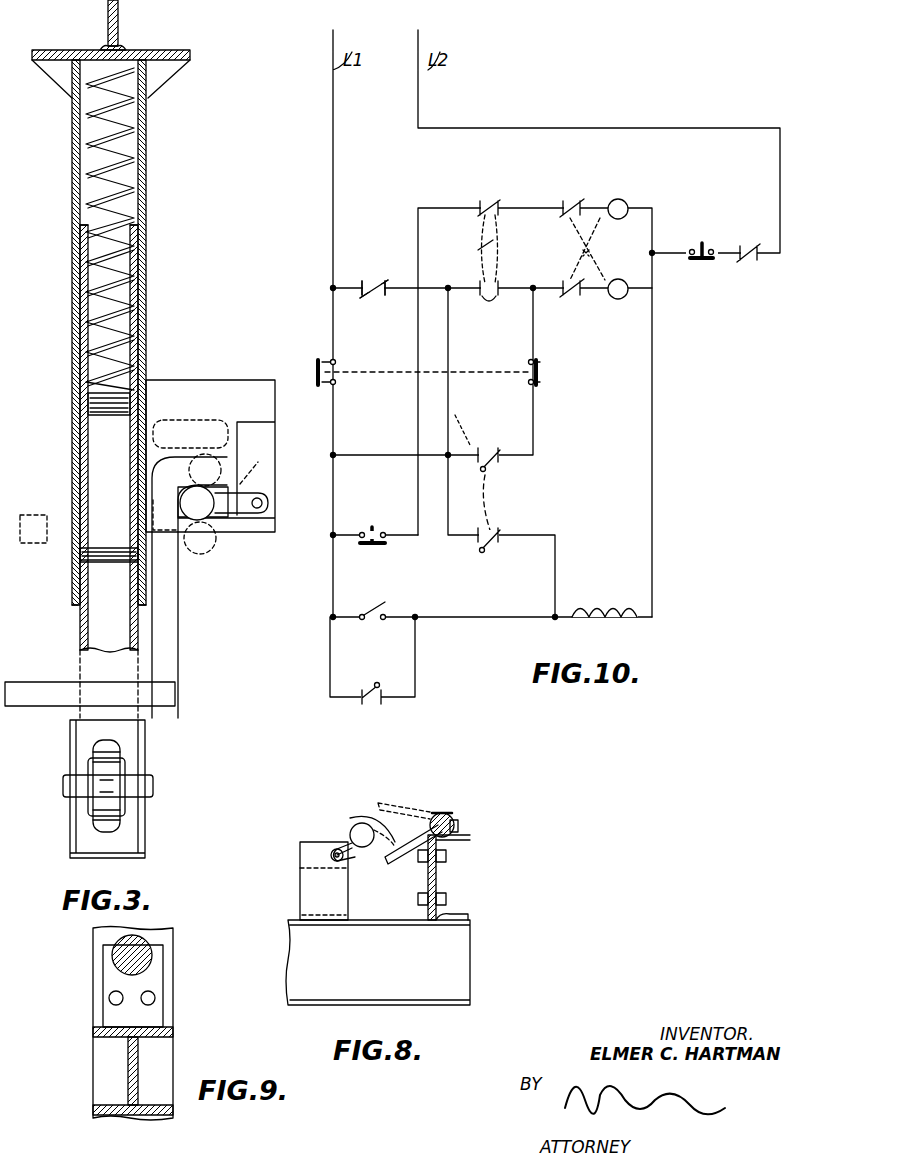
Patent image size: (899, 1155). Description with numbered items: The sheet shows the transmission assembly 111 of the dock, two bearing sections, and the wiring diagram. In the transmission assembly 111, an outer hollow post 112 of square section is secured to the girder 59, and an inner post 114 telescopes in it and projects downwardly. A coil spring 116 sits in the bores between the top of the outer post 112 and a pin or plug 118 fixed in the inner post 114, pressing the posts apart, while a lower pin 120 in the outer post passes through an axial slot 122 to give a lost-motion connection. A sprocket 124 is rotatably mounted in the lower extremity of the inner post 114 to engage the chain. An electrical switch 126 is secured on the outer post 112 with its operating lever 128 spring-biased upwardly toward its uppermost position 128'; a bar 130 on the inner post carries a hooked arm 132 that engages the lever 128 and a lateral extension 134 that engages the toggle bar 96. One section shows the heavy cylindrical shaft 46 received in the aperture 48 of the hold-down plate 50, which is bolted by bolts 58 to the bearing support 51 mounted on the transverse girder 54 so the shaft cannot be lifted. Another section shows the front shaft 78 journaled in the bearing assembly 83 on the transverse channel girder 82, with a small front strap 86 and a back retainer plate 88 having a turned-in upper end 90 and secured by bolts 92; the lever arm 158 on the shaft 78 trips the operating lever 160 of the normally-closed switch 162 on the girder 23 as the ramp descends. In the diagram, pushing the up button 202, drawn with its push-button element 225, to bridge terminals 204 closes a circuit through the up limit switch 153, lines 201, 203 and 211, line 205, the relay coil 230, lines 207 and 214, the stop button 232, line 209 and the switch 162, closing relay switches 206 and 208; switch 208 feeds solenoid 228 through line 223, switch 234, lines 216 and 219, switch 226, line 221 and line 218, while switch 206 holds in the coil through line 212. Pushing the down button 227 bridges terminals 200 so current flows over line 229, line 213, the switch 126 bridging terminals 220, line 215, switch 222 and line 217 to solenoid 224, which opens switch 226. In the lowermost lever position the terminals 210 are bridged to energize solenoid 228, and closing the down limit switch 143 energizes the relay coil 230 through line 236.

In FIG. 3, the girder 59 is at (118, 18).
In FIG. 3, the outer hollow post 112 is at (138, 226).
In FIG. 3, the coil spring 116 is at (118, 300).
In FIG. 3, the pin or plug 118 is at (113, 412).
In FIG. 3, the toggle bar 96 is at (34, 514).
In FIG. 3, the axial slot 122 is at (78, 532).
In FIG. 3, the lower pin 120 is at (115, 560).
In FIG. 3, the inner post 114 is at (76, 640).
In FIG. 3, the hooked arm 132 is at (165, 588).
In FIG. 3, the electrical switch 126 is at (247, 496).
In FIG. 10, the electrical switch 126 is at (505, 249).
In FIG. 3, the operating lever 128 is at (245, 526).
In FIG. 3, the uppermost position of operating lever 128' is at (252, 467).
In FIG. 3, the lateral extension 134 is at (45, 694).
In FIG. 3, the bar 130 is at (146, 710).
In FIG. 3, the sprocket 124 is at (118, 822).
In FIG. 3, the transmission assembly 111 is at (203, 766).
In FIG. 9, the hold-down plate 50 is at (103, 975).
In FIG. 9, the cylindrical shaft 46 is at (140, 945).
In FIG. 9, the aperture 48 is at (150, 960).
In FIG. 9, the bearing support 51 is at (158, 977).
In FIG. 9, the bolts 58 is at (120, 1003).
In FIG. 9, the transverse girder 54 is at (96, 1032).
In FIG. 8, the girder 23 is at (458, 968).
In FIG. 8, the normally-closed switch 162 is at (300, 860).
In FIG. 10, the normally-closed switch 162 is at (752, 265).
In FIG. 8, the lever arm 158 is at (350, 826).
In FIG. 8, the operating lever 160 is at (351, 855).
In FIG. 8, the turned-in upper end 90 is at (434, 816).
In FIG. 8, the bolts 92 is at (405, 862).
In FIG. 8, the transverse channel girder 82 is at (438, 875).
In FIG. 8, the back retainer plate 88 is at (425, 885).
In FIG. 8, the bearing assembly 83 is at (465, 805).
In FIG. 8, the front strap 86 is at (458, 826).
In FIG. 8, the shaft 78 is at (470, 837).
In FIG. 10, the up limit switch 153 is at (373, 281).
In FIG. 10, the line 213 is at (420, 228).
In FIG. 10, the relay coil 230 is at (605, 600).
In FIG. 10, the terminals 220 is at (492, 180).
In FIG. 10, the line 215 is at (530, 208).
In FIG. 10, the switch 222 is at (568, 195).
In FIG. 10, the line 217 is at (586, 208).
In FIG. 10, the solenoid coil 224 is at (622, 200).
In FIG. 10, the line 218 is at (635, 283).
In FIG. 10, the normally-closed switch 226 is at (562, 300).
In FIG. 10, the line 221 is at (580, 298).
In FIG. 10, the solenoid 228 is at (618, 299).
In FIG. 10, the line 219 is at (520, 285).
In FIG. 10, the terminals 210 is at (486, 314).
In FIG. 10, the line 216 is at (530, 338).
In FIG. 10, the line 207 is at (653, 228).
In FIG. 10, the line 214 is at (672, 255).
In FIG. 10, the stop button 232 is at (702, 262).
In FIG. 10, the line 209 is at (725, 248).
In FIG. 10, the down button 227 is at (316, 366).
In FIG. 10, the terminals 200 is at (340, 360).
In FIG. 10, the normally-closed switch 234 is at (540, 372).
In FIG. 10, the line 229 is at (333, 418).
In FIG. 10, the line 203 is at (390, 455).
In FIG. 10, the line 201 is at (450, 398).
In FIG. 10, the relay switch arm 208 is at (488, 447).
In FIG. 10, the line 223 is at (533, 425).
In FIG. 10, the push button 225 is at (385, 518).
In FIG. 10, the up button 202 is at (370, 548).
In FIG. 10, the relay switch 206 is at (490, 548).
In FIG. 10, the line 212 is at (556, 548).
In FIG. 10, the terminals 204 is at (383, 612).
In FIG. 10, the line 211 is at (345, 617).
In FIG. 10, the down limit switch 143 is at (370, 680).
In FIG. 10, the line 236 is at (415, 668).
In FIG. 10, the line 205 is at (490, 617).